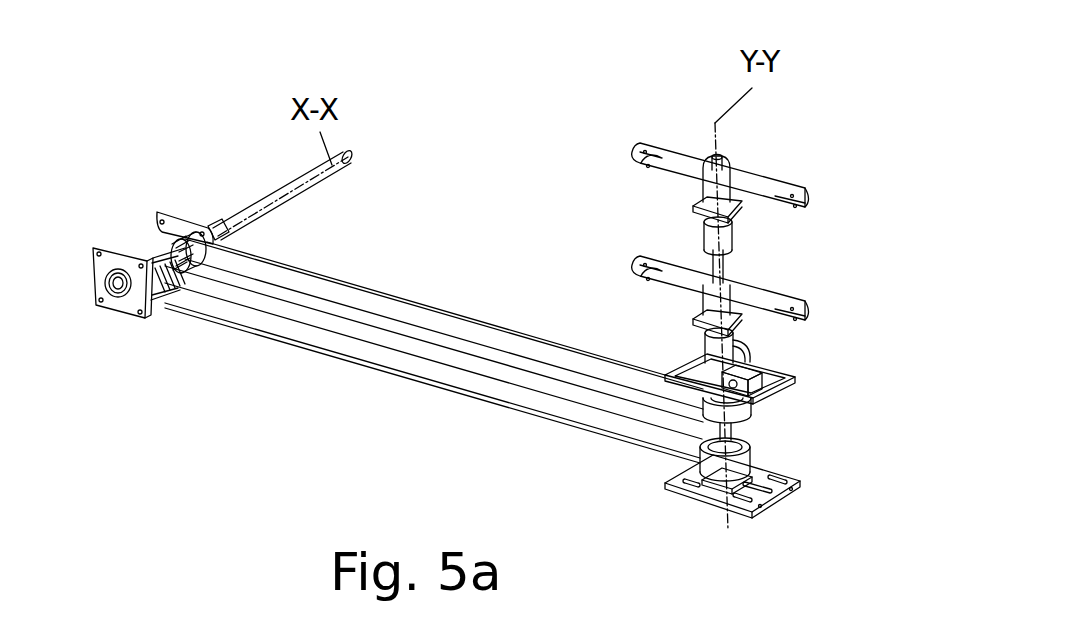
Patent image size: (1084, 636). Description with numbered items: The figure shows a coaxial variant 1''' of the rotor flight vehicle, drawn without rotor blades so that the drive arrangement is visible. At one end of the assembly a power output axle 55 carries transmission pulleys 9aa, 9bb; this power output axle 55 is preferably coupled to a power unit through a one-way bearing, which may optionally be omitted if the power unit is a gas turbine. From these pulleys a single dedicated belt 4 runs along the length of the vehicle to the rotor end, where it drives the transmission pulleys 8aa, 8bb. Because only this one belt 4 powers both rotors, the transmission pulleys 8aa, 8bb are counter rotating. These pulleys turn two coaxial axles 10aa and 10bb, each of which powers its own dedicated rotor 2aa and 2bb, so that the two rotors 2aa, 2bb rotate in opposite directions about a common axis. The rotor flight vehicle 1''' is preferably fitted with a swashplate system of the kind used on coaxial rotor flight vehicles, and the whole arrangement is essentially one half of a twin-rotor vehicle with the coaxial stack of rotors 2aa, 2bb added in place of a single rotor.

The coaxial variant rotor flight vehicle 1''' is at (628, 63).
The rotor 2aa is at (752, 142).
The rotor 2bb is at (808, 284).
The belt 4 is at (398, 372).
The power output axle 55 is at (352, 162).
The transmission pulley 8aa is at (750, 406).
The transmission pulley 8bb is at (752, 446).
The transmission pulley 9aa is at (160, 233).
The transmission pulley 9bb is at (157, 303).
The coaxial axle 10aa is at (735, 251).
The coaxial axle 10bb is at (752, 440).